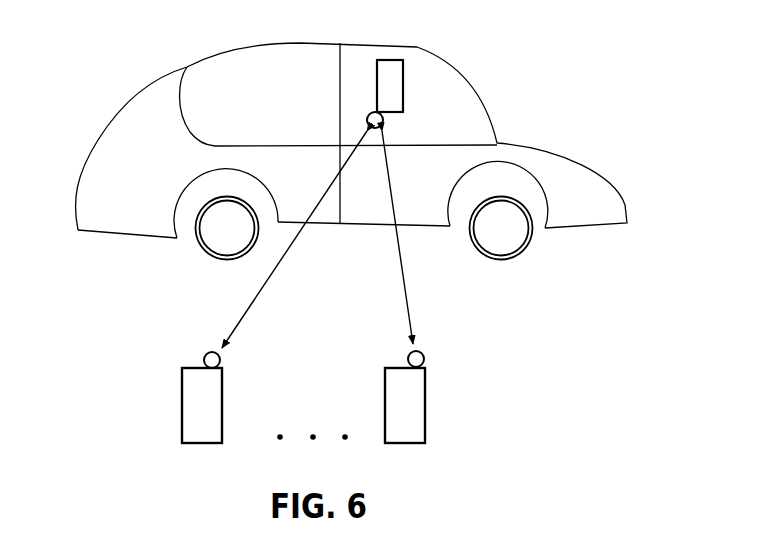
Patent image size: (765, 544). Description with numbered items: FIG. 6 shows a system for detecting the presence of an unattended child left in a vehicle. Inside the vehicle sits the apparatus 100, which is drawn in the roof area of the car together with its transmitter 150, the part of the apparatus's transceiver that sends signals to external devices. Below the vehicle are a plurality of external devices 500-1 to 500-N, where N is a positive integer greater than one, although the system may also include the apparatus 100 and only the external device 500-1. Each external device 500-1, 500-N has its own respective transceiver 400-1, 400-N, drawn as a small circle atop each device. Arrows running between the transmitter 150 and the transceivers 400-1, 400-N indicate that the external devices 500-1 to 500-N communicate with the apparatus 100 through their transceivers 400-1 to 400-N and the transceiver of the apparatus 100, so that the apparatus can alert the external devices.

The apparatus 100 is at (405, 72).
The transmitter 150 is at (385, 120).
The transceiver 400-1 is at (223, 362).
The transceiver 400-N is at (427, 362).
The external device 500-1 is at (180, 417).
The external device 500-N is at (427, 415).